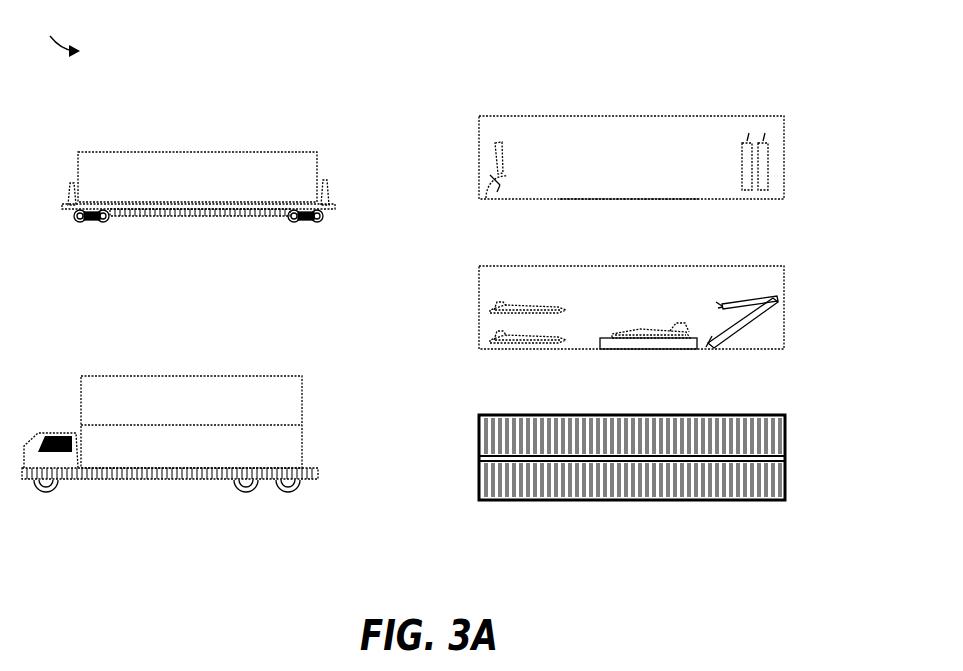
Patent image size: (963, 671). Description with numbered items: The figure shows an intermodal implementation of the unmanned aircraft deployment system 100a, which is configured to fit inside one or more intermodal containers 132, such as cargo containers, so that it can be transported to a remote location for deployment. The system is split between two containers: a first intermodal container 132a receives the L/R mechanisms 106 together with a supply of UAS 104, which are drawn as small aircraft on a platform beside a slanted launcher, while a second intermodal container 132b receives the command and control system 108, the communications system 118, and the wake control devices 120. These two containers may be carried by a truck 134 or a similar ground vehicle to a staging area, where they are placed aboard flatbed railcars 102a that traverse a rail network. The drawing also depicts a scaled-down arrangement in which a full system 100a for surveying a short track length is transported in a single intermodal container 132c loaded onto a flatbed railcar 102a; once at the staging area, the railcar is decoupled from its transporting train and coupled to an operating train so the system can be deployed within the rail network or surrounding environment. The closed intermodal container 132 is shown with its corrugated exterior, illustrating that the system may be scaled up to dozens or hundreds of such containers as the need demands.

The system 100a is at (81, 30).
The flatbed railcar 102a is at (200, 212).
The UAS 104 is at (503, 305).
The L/R mechanisms 106 is at (747, 296).
The command and control system 108 is at (632, 183).
The communications system 118 is at (496, 157).
The wake control devices 120 is at (770, 167).
The intermodal container 132 is at (787, 460).
The first intermodal container 132a is at (632, 115).
The second intermodal container 132b is at (785, 307).
The single intermodal container 132c is at (197, 152).
The truck 134 is at (170, 481).